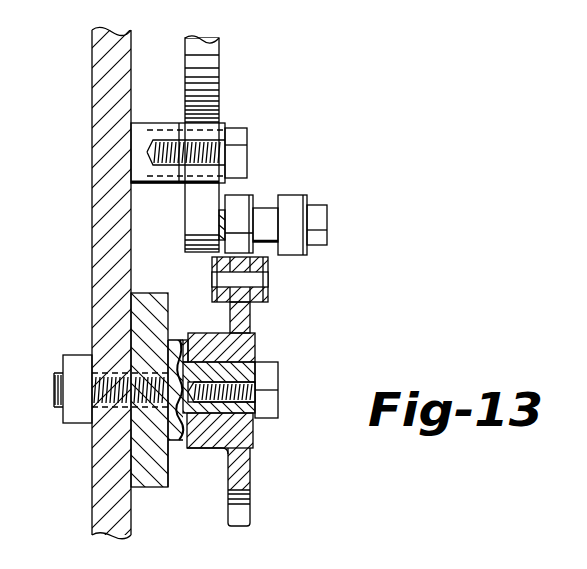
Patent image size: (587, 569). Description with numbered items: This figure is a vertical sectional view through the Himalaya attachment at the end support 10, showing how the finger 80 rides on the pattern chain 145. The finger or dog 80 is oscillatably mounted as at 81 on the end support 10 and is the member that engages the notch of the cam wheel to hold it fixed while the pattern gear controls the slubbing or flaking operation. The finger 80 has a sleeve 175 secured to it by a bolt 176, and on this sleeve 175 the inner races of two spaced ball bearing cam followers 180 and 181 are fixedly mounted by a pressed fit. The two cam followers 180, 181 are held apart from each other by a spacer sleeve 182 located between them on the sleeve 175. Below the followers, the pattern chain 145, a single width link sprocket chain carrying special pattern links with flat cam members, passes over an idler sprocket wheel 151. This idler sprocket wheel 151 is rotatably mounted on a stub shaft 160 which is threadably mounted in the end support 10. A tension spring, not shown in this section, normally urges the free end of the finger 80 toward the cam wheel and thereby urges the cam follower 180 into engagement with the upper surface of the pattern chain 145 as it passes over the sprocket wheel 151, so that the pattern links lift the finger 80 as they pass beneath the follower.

The end support 10 is at (92, 86).
The finger 80 is at (219, 94).
The oscillatable mounting 81 is at (247, 135).
The sleeve 175 is at (224, 221).
The ball bearing cam follower 180 is at (243, 200).
The spacer sleeve 182 is at (265, 212).
The ball bearing cam follower 181 is at (300, 200).
The bolt 176 is at (325, 219).
The pattern chain 145 is at (210, 265).
The stub shaft 160 is at (278, 380).
The idler sprocket wheel 151 is at (250, 467).